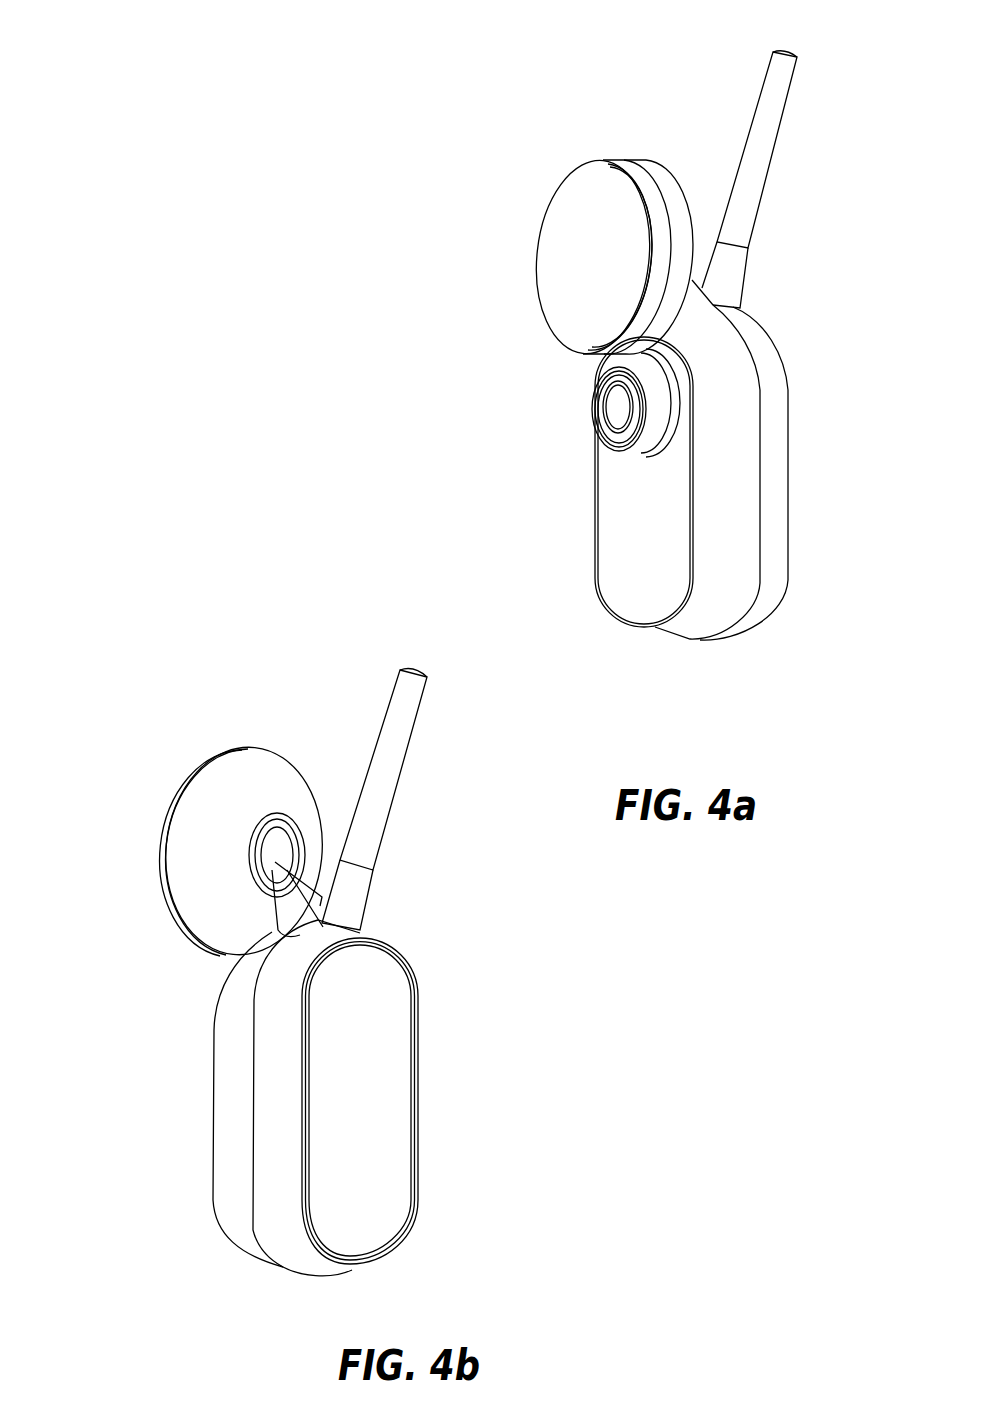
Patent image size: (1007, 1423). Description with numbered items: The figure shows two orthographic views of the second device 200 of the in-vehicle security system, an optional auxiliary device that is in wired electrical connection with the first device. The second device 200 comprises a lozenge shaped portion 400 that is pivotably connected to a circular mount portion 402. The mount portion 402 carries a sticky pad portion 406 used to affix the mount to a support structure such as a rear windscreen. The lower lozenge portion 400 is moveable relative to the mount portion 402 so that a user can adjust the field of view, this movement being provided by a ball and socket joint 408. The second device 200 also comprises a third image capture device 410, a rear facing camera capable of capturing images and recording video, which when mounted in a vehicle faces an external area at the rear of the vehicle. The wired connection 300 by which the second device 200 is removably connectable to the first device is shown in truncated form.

In FIG. 4A, the second device 200 is at (685, 637).
In FIG. 4B, the second device 200 is at (315, 1128).
In FIG. 4A, the wired connection 300 is at (778, 138).
In FIG. 4B, the wired connection 300 is at (415, 720).
In FIG. 4A, the lozenge shaped portion 400 is at (582, 528).
In FIG. 4A, the circular mount portion 402 is at (606, 143).
In FIG. 4B, the circular mount portion 402 is at (182, 732).
In FIG. 4A, the sticky pad portion 406 is at (562, 218).
In FIG. 4B, the ball and socket joint 408 is at (287, 848).
In FIG. 4A, the third image capture device 410 is at (588, 387).
In FIG. 4B, the third image capture device 410 is at (207, 1013).